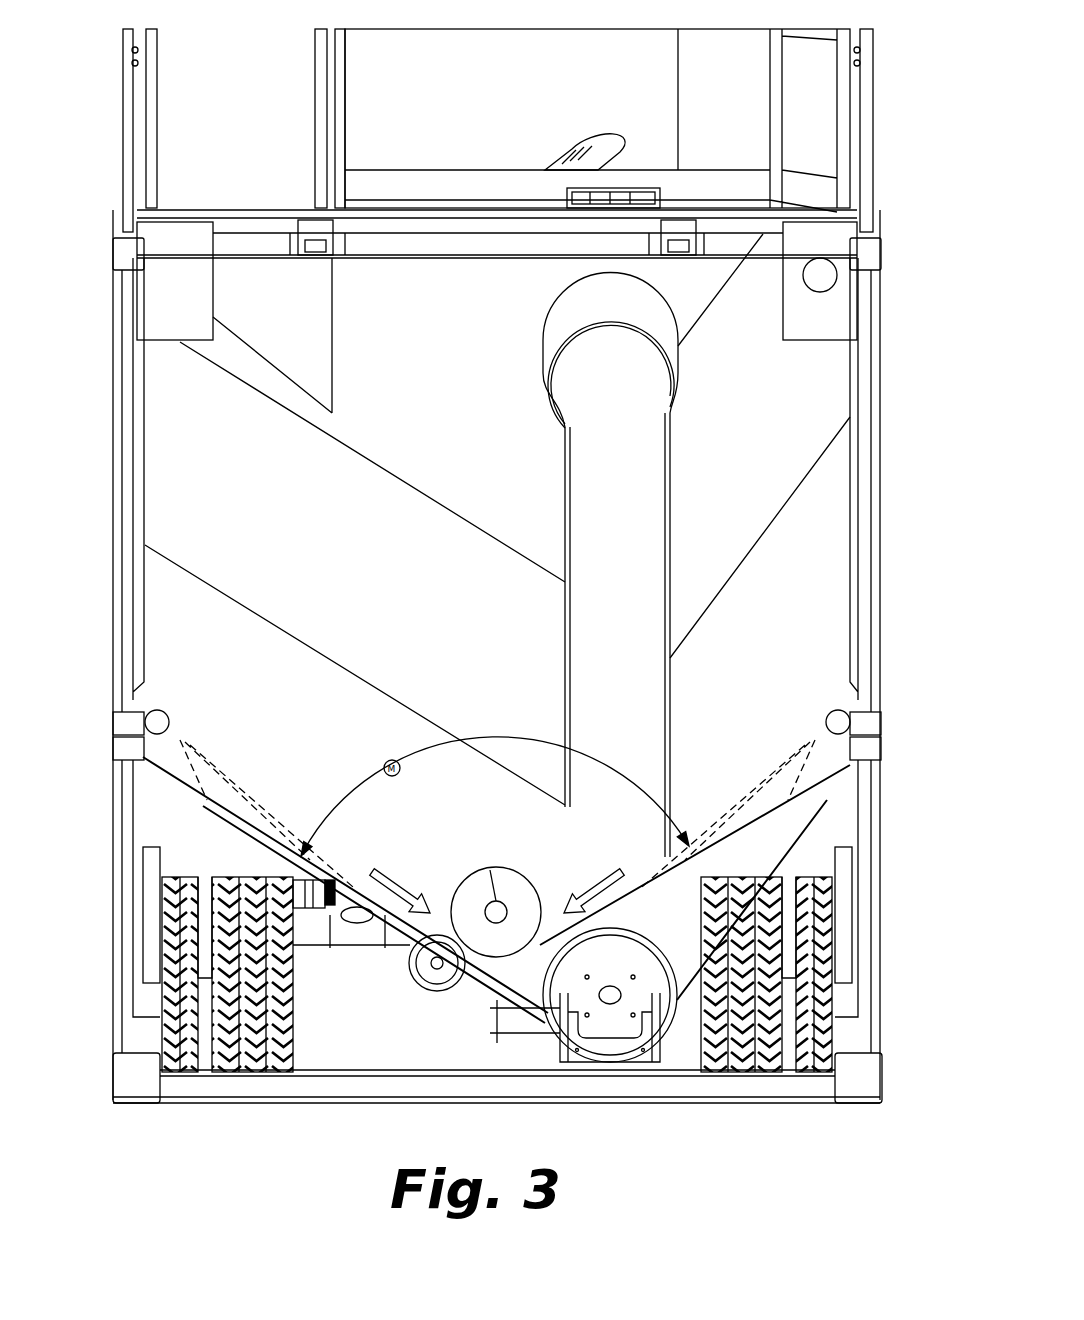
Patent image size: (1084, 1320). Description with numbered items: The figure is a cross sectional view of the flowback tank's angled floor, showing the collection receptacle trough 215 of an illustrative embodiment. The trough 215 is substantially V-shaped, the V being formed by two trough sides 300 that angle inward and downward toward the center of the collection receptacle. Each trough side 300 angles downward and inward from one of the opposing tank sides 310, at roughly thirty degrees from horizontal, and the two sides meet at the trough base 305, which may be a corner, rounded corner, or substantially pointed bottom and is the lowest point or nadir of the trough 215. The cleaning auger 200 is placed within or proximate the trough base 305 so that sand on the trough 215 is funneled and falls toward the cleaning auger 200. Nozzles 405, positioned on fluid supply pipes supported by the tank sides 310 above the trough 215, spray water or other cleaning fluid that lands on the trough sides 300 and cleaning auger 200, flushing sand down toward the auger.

The trough 215 is at (186, 447).
The trough side 300 is at (366, 575).
The tank side 310 is at (127, 607).
The nozzle 405 is at (156, 709).
The cleaning auger 200 is at (474, 892).
The trough base 305 is at (600, 1008).